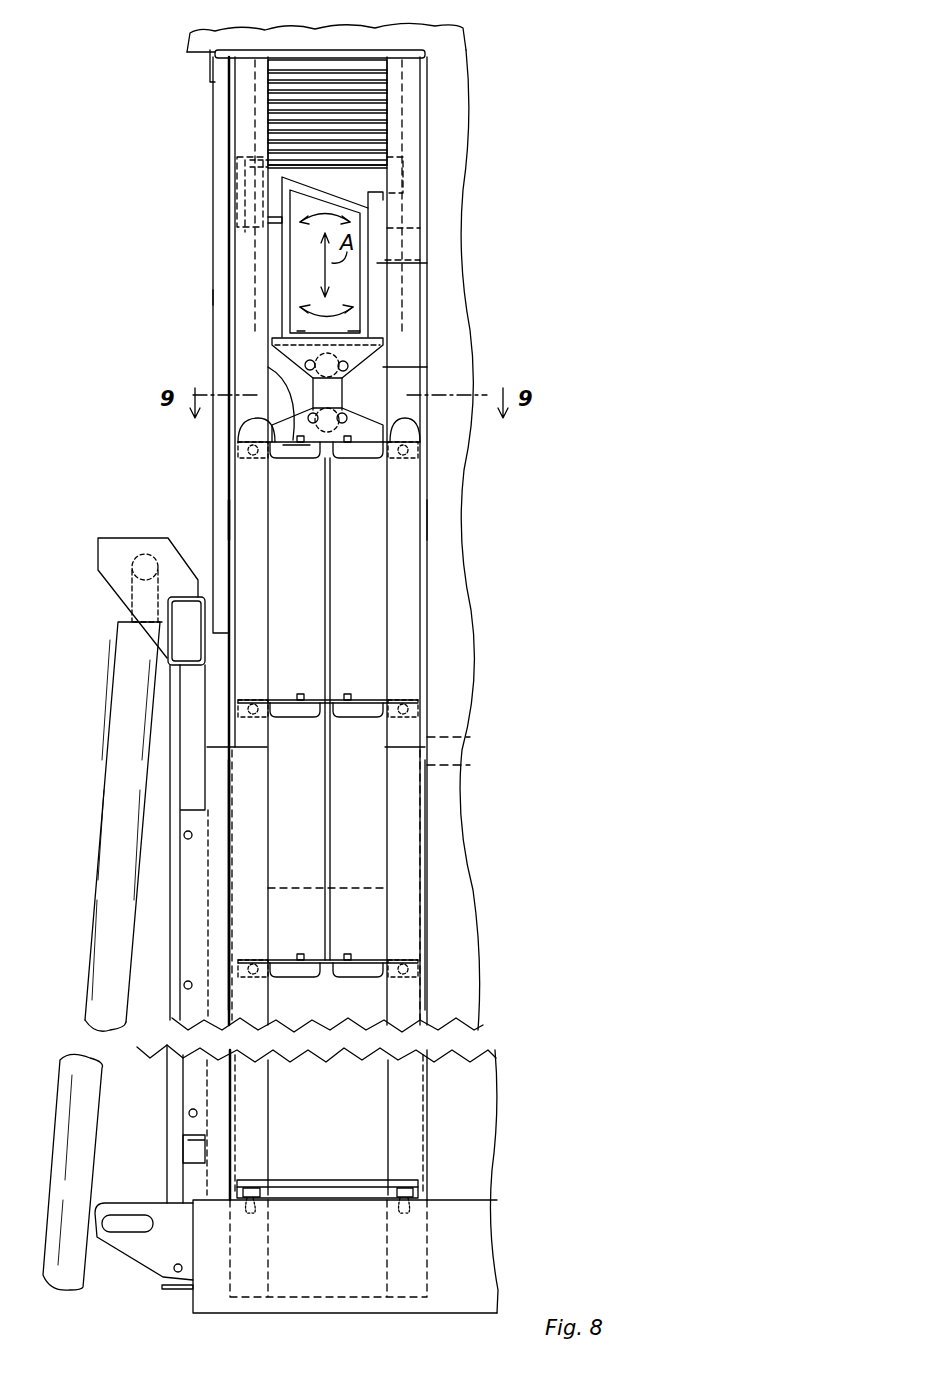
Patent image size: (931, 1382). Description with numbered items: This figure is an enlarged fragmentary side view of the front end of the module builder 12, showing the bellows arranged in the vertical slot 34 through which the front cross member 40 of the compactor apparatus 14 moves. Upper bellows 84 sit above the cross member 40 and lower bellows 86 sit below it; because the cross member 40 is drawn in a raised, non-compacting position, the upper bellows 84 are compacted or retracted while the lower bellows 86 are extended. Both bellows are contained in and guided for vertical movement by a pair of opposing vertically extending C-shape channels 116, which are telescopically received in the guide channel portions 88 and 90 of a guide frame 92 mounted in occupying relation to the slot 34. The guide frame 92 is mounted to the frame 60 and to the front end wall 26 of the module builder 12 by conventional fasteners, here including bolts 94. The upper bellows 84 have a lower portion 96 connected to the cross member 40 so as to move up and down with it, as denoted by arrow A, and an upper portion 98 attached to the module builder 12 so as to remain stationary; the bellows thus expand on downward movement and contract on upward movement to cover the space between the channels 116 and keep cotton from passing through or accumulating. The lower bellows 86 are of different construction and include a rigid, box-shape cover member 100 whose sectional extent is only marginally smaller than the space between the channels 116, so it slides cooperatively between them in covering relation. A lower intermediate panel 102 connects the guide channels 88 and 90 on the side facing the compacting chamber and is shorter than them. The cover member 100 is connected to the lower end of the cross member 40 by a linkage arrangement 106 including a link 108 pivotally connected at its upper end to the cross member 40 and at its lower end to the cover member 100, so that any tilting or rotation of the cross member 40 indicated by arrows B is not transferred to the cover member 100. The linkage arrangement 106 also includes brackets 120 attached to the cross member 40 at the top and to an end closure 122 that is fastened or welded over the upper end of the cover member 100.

The module builder 12 is at (612, 108).
The compactor apparatus 14 is at (282, 248).
The front end wall 26 is at (213, 298).
The slot 34 is at (242, 136).
The front cross member 40 is at (284, 278).
The frame 60 is at (462, 1197).
The upper bellows 84 is at (370, 98).
The lower bellows 86 is at (355, 433).
The guide channel portion 88 is at (203, 782).
The guide channel portion 90 is at (425, 903).
The guide frame 92 is at (427, 803).
The bolts 94 is at (185, 835).
The lower portion 96 is at (393, 165).
The upper portion 98 is at (383, 48).
The cover member 100 is at (272, 423).
The lower intermediate panel 102 is at (360, 888).
The linkage arrangement 106 is at (347, 387).
The link 108 is at (300, 448).
The C-shape channels 116 is at (227, 520).
The brackets 120 is at (282, 365).
The end closure 122 is at (388, 427).